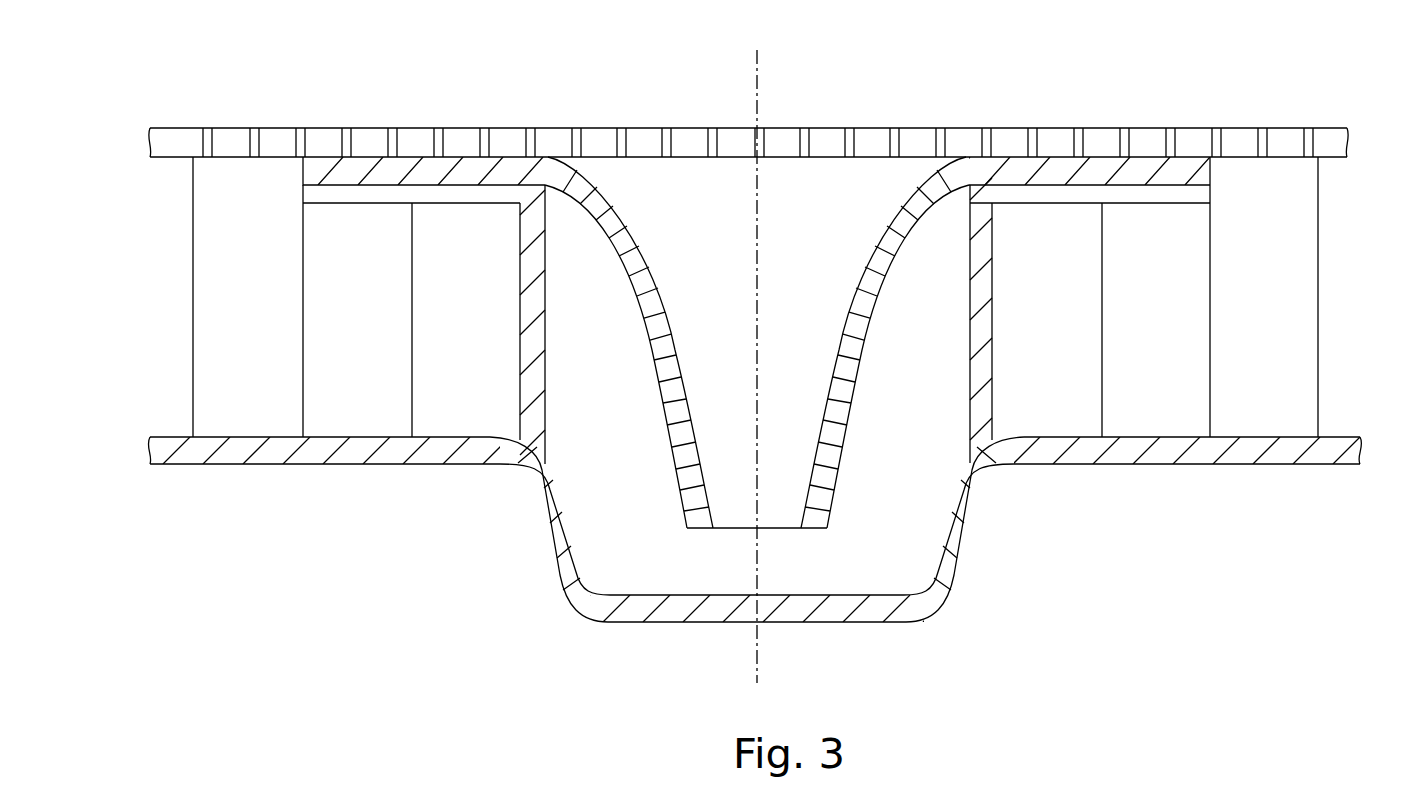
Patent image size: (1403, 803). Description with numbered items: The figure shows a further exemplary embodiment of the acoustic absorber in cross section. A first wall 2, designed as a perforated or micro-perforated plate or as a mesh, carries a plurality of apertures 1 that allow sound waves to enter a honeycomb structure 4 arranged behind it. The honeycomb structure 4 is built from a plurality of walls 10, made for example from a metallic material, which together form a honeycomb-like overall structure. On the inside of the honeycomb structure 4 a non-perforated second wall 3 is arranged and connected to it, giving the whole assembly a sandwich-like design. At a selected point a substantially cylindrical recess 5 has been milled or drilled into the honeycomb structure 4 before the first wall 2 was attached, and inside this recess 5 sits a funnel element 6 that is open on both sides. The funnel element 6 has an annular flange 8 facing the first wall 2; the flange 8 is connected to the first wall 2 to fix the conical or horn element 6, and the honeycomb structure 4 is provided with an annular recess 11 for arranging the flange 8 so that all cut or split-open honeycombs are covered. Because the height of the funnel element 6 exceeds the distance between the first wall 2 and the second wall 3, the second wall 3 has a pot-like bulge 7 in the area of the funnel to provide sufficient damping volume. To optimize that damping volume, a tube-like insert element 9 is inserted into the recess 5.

The apertures 1 is at (1030, 142).
The first wall 2 is at (918, 142).
The second wall 3 is at (432, 450).
The honeycomb structure 4 is at (1292, 249).
The cylindrical recess 5 is at (637, 488).
The funnel element 6 is at (827, 448).
The pot-like bulge 7 is at (833, 610).
The annular flange 8 is at (405, 178).
The tube-like insert element 9 is at (972, 402).
The walls 10 is at (1213, 360).
The annular recess 11 is at (330, 197).